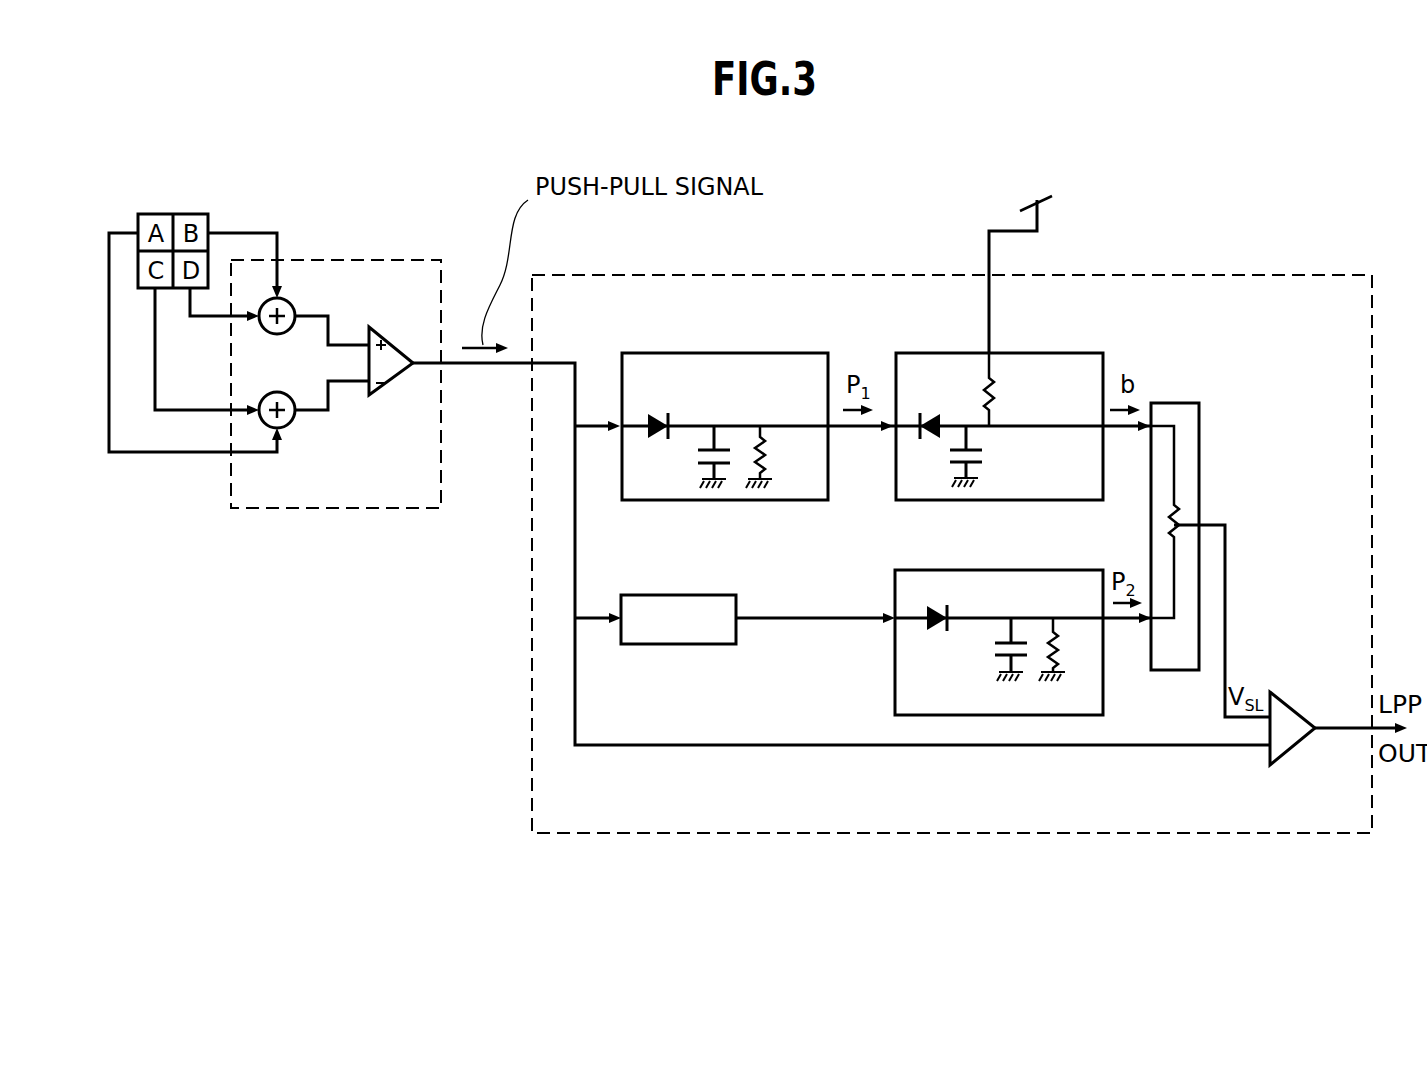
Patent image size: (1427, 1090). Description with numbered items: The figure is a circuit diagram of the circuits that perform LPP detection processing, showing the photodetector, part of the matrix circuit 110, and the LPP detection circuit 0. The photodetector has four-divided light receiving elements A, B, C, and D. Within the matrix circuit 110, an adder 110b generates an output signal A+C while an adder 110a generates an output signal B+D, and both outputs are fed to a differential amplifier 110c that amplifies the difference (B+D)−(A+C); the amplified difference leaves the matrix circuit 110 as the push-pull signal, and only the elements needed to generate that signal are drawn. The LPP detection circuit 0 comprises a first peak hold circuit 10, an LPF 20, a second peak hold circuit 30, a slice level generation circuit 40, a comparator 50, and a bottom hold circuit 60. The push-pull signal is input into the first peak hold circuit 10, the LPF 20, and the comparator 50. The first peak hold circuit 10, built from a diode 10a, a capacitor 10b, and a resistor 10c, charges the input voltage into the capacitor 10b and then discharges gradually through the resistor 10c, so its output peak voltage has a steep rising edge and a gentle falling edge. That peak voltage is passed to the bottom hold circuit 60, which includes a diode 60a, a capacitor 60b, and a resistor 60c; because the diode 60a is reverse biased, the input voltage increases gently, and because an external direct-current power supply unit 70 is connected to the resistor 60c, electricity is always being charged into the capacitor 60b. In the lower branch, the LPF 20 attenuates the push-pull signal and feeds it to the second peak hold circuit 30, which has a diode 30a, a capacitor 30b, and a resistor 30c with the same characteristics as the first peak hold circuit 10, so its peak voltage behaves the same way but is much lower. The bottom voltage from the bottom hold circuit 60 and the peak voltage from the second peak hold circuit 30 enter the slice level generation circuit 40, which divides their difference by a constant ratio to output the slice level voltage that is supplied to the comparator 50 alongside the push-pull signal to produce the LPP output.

The LPP detection circuit 0 is at (952, 524).
The peak hold circuit 1 10 is at (637, 362).
The diode 10a is at (652, 413).
The capacitor 10b is at (691, 457).
The resistor 10c is at (777, 457).
The LPF (Low Pass Filter) 20 is at (640, 595).
The peak hold circuit 2 30 is at (913, 577).
The diode 30a is at (943, 604).
The capacitor 30b is at (987, 649).
The resistor 30c is at (1068, 649).
The slice level generation circuit 40 is at (1200, 473).
The comparator 50 is at (1293, 703).
The bottom hold circuit 60 is at (915, 360).
The diode 60a is at (928, 413).
The capacitor 60b is at (990, 456).
The resistor 60c is at (1013, 389).
The direct-current power supply unit 70 is at (1035, 262).
The matrix circuit 110 is at (358, 355).
The adder 110a is at (314, 307).
The adder 110b is at (314, 421).
The differential amplifier 110c is at (394, 379).